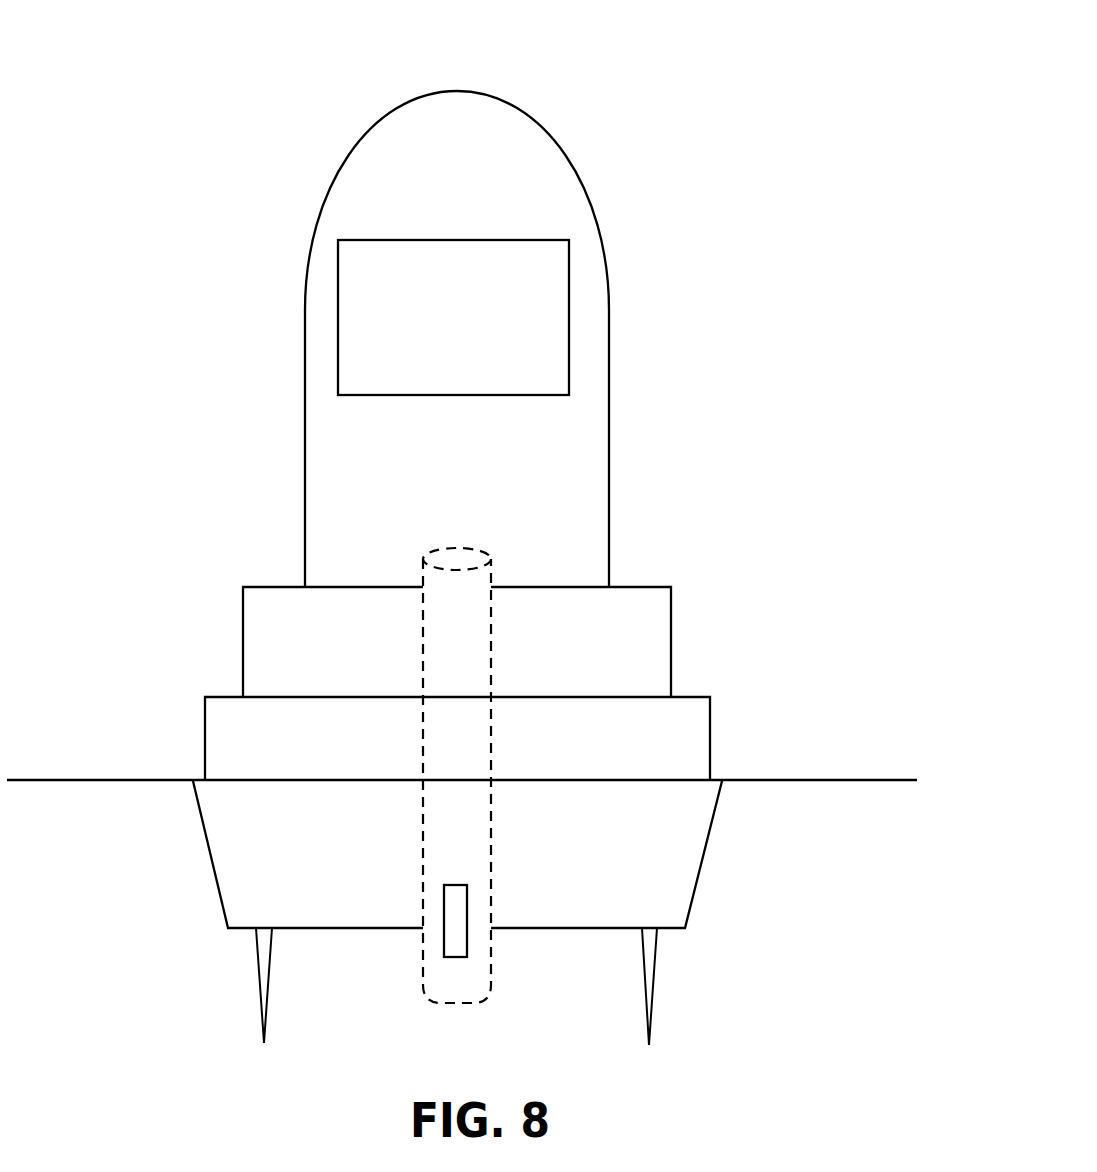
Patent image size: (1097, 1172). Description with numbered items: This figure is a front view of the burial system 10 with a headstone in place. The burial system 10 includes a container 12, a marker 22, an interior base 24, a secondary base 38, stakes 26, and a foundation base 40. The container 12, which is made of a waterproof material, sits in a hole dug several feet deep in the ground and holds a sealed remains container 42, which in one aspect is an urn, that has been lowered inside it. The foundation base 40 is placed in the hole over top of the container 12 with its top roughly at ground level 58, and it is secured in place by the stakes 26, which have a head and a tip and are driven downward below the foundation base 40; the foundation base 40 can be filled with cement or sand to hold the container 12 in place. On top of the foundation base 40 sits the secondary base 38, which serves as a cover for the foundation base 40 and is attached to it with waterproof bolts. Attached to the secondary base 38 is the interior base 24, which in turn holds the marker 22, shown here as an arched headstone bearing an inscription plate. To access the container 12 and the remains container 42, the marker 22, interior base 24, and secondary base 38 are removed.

The burial system 10 is at (612, 103).
The container 12 is at (490, 663).
The marker 22 is at (402, 155).
The interior base 24 is at (640, 593).
The stakes 26 is at (263, 967).
The secondary base 38 is at (568, 325).
The foundation base 40 is at (705, 848).
The remains container 42 is at (452, 937).
The ground level 58 is at (92, 780).